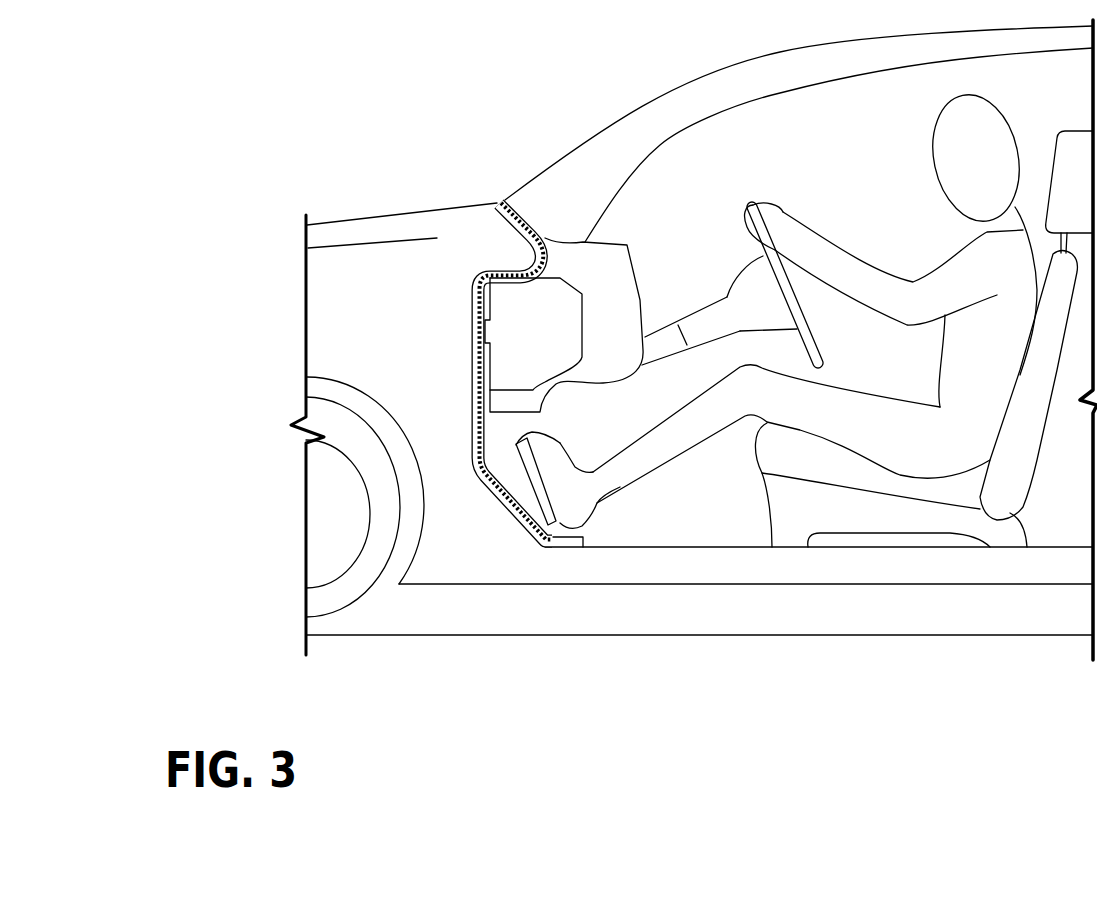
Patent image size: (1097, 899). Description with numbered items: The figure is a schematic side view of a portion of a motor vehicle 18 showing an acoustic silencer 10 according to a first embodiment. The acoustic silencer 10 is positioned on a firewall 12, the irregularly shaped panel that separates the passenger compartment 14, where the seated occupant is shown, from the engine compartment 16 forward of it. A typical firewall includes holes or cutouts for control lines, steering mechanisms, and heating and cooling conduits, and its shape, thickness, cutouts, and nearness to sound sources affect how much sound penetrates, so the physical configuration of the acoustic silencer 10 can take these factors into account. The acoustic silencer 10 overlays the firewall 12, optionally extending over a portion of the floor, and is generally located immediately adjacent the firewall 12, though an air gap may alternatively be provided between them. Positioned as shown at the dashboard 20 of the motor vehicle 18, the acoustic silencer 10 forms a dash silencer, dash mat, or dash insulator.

The acoustic silencer 10 is at (494, 423).
The firewall 12 is at (470, 313).
The passenger compartment 14 is at (884, 199).
The engine compartment 16 is at (390, 334).
The motor vehicle 18 is at (574, 141).
The dashboard 20 is at (640, 285).